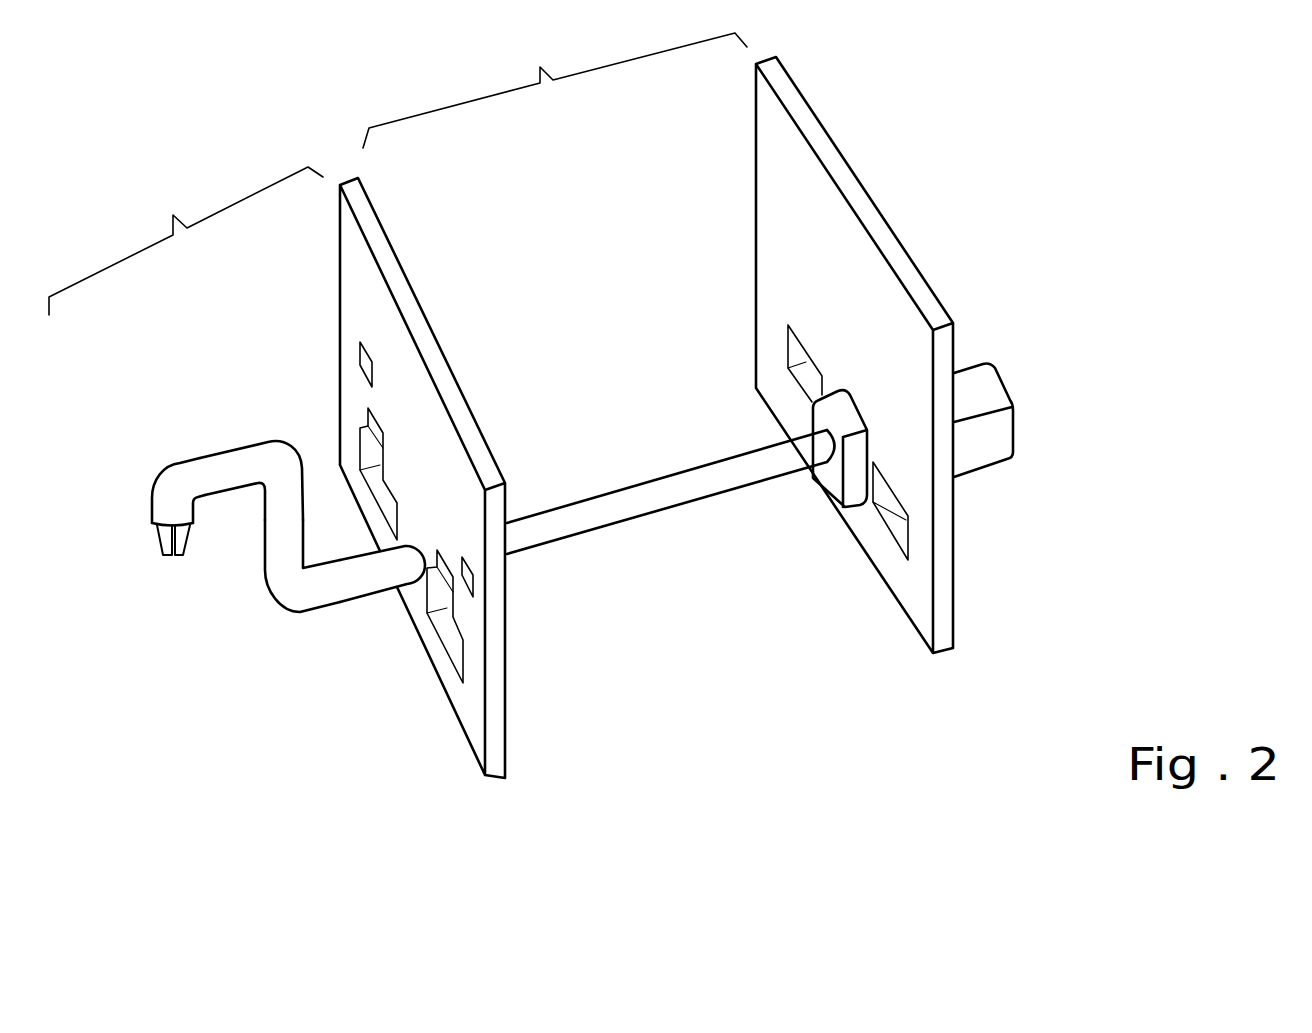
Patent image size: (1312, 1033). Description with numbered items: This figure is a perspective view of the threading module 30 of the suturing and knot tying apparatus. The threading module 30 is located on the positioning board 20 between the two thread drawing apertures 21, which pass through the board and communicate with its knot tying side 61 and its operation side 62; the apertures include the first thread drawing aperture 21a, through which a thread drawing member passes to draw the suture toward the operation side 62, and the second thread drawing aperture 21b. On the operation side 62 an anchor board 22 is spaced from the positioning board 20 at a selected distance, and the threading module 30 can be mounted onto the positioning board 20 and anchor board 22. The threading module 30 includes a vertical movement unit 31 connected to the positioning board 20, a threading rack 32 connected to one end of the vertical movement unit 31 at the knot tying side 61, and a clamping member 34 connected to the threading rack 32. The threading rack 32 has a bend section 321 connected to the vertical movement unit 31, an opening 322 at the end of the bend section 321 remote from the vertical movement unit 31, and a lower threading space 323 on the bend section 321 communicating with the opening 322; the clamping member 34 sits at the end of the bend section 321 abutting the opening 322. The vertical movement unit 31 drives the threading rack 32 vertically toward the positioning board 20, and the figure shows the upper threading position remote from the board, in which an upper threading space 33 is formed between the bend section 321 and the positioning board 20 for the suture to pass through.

The positioning board 20 is at (362, 200).
The thread drawing apertures 21 is at (495, 480).
The first thread drawing aperture 21a is at (452, 650).
The second thread drawing aperture 21b is at (377, 422).
The anchor board 22 is at (780, 82).
The threading module 30 is at (523, 498).
The vertical movement unit 31 is at (832, 485).
The threading rack 32 is at (237, 511).
The bend section 321 is at (165, 483).
The opening 322 is at (228, 580).
The lower threading space 323 is at (210, 518).
The upper threading space 33 is at (340, 537).
The clamping member 34 is at (167, 540).
The knot tying side 61 is at (186, 241).
The operation side 62 is at (555, 90).